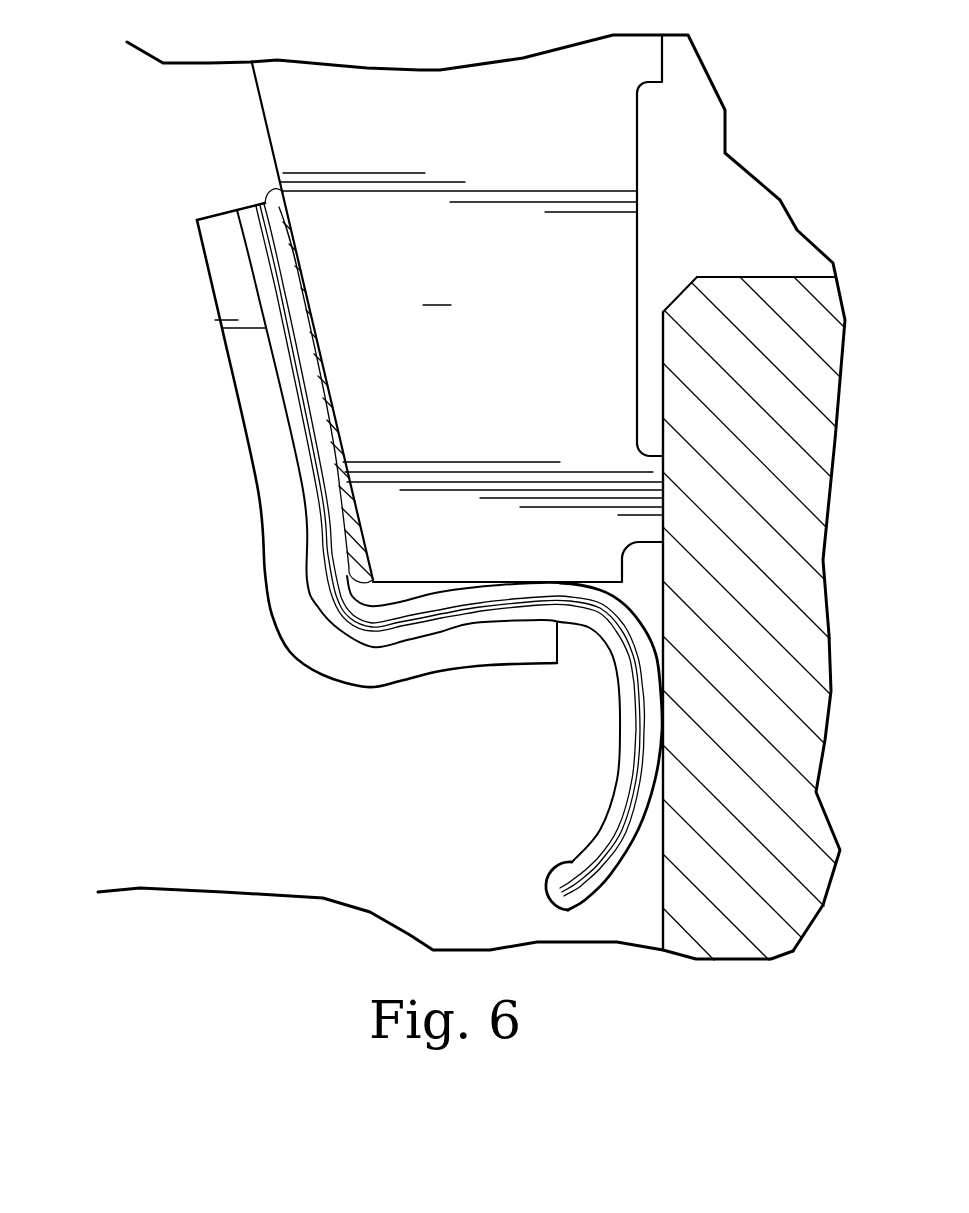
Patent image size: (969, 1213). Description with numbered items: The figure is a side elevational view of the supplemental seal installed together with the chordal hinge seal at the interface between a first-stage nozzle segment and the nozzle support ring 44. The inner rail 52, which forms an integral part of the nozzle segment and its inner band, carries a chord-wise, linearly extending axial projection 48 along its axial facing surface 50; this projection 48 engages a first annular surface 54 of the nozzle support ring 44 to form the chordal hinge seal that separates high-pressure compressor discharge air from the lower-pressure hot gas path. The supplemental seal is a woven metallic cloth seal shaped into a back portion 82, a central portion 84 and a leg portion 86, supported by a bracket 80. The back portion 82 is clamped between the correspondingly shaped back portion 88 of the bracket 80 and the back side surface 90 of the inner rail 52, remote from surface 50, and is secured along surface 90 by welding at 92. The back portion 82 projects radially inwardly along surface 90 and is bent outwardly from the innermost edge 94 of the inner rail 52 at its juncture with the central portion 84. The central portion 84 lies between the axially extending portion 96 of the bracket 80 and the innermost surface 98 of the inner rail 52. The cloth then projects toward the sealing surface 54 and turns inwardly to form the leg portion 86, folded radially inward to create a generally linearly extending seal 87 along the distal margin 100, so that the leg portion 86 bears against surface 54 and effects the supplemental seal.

The nozzle support ring 44 is at (771, 925).
The axial projection 48 is at (653, 470).
The axial facing surface 50 is at (638, 163).
The inner rail 52 is at (471, 308).
The first annular surface 54 is at (647, 317).
The bracket 80 is at (238, 398).
The back portion 82 is at (260, 263).
The central portion 84 is at (483, 612).
The leg portion 86 is at (620, 843).
The linearly extending seal 87 is at (663, 721).
The back portion of the bracket 88 is at (242, 353).
The back side surface 90 is at (262, 108).
The weld 92 is at (268, 190).
The innermost edge 94 is at (337, 612).
The axially extending portion 96 is at (405, 668).
The innermost surface 98 is at (520, 582).
The distal margin 100 is at (598, 820).